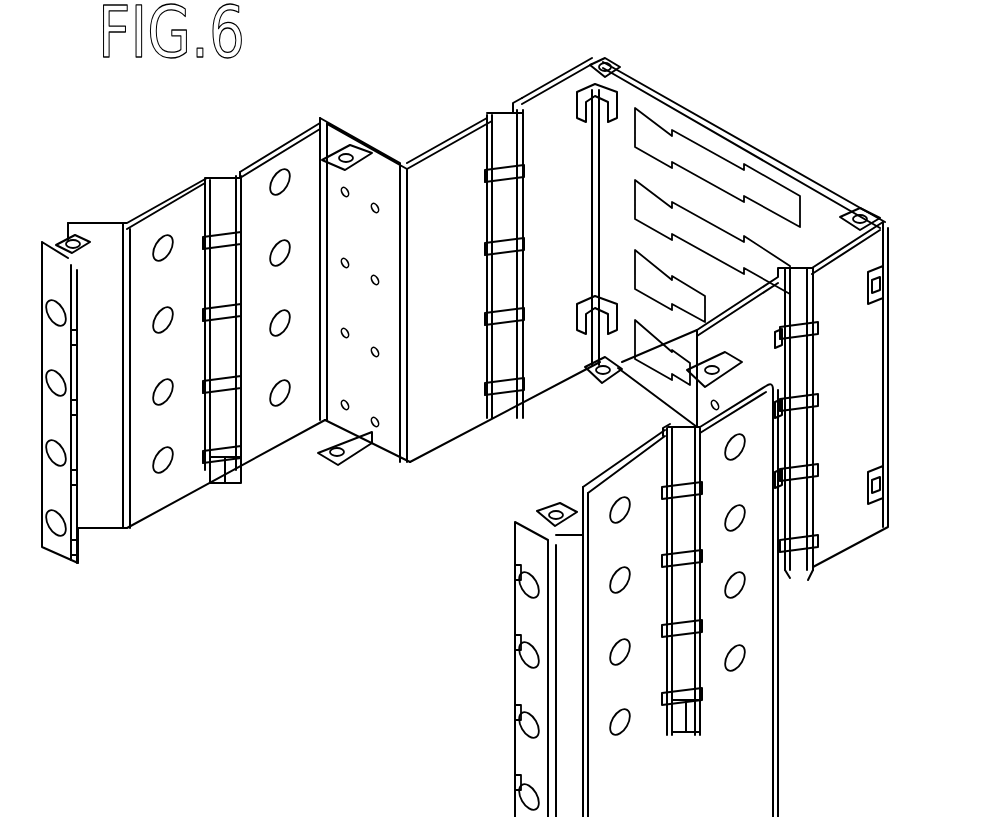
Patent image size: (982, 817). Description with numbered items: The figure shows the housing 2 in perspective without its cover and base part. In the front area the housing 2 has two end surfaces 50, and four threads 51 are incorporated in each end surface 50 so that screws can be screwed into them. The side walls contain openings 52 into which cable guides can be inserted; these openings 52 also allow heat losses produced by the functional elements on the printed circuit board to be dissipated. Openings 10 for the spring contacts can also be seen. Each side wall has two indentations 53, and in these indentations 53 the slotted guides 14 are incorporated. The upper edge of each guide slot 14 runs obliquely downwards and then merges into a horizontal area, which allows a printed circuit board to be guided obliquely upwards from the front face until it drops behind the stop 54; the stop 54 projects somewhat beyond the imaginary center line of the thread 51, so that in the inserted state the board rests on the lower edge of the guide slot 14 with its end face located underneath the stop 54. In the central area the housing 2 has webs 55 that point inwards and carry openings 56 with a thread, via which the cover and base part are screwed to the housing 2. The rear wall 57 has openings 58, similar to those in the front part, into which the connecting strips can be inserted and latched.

The housing 2 is at (800, 128).
The openings for the spring contacts 10 is at (348, 190).
The slotted guide 14 is at (225, 485).
The end surface 50 is at (52, 548).
The thread 51 is at (65, 465).
The opening in side wall 52 is at (168, 466).
The indentation 53 is at (225, 176).
The stop 54 is at (517, 640).
The web 55 is at (352, 152).
The opening with a thread 56 is at (78, 240).
The rear wall 57 is at (665, 100).
The opening in rear wall 58 is at (720, 242).